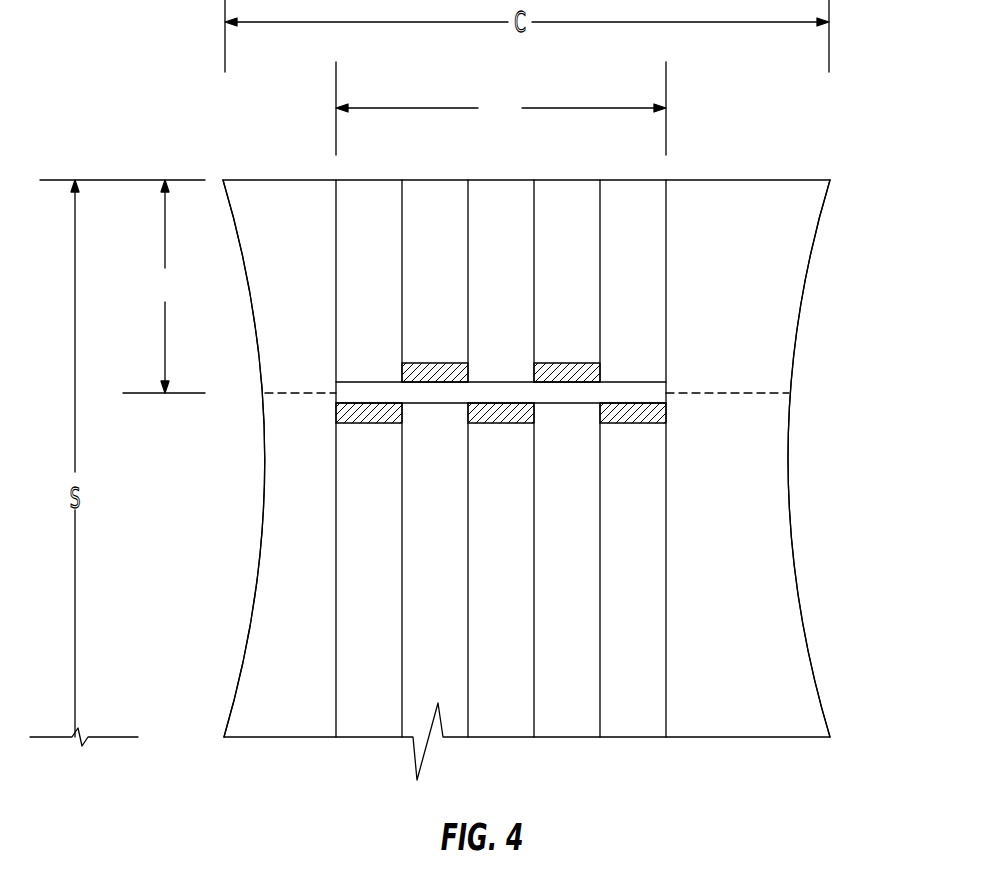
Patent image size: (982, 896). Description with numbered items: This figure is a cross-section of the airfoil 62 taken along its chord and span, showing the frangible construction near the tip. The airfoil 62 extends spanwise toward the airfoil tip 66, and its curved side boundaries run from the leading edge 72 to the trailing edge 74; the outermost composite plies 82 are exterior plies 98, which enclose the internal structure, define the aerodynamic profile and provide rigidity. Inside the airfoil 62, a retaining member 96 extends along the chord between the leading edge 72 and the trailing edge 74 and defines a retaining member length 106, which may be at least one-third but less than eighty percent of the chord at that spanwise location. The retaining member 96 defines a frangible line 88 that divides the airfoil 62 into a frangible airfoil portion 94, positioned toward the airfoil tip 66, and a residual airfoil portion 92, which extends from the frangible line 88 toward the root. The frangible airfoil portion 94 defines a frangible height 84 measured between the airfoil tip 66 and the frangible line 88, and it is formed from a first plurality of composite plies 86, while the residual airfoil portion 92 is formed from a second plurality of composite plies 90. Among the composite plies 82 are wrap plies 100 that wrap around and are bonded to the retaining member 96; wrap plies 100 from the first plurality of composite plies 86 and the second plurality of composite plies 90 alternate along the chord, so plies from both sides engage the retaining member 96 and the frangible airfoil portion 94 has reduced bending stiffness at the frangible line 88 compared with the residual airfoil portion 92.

The airfoil 62 is at (142, 72).
The airfoil tip 66 is at (710, 180).
The leading edge 72 is at (270, 599).
The trailing edge 74 is at (793, 567).
The composite ply 82 is at (287, 480).
The frangible height 84 is at (164, 286).
The first plurality of composite plies 86 is at (833, 251).
The frangible line 88 is at (765, 393).
The second plurality of composite plies 90 is at (828, 688).
The residual airfoil portion 92 is at (792, 537).
The frangible airfoil portion 94 is at (822, 320).
The retaining member 96 is at (353, 392).
The exterior plies 98 is at (277, 524).
The wrap plies 100 is at (351, 305).
The retaining member length 106 is at (501, 108).